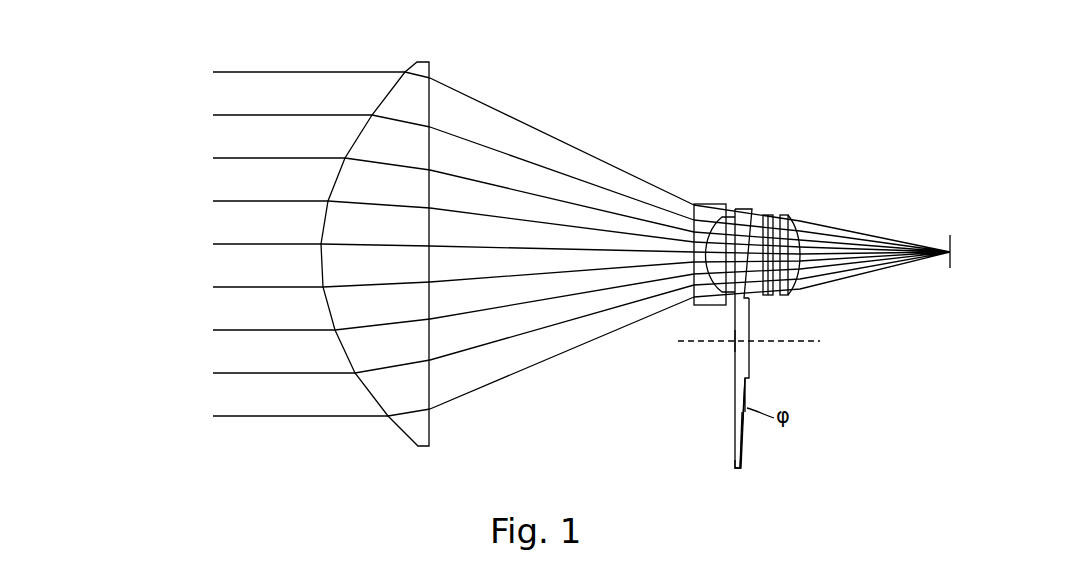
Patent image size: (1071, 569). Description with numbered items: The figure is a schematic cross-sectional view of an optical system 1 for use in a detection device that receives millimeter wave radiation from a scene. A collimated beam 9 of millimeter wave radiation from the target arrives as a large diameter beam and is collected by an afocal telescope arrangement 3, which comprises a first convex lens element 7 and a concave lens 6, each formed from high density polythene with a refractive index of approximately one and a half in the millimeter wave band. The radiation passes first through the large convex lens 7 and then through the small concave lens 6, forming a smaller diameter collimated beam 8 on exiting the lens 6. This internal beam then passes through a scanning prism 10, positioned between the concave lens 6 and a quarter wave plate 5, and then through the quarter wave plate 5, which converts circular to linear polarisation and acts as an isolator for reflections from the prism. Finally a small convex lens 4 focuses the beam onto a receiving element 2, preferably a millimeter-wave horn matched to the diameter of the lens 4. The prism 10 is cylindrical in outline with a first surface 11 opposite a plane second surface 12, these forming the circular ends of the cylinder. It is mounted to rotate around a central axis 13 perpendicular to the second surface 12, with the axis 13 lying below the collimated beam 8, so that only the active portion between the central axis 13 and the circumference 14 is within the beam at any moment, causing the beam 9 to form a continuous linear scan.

The optical system 1 is at (880, 117).
The receiving element 2 is at (951, 262).
The afocal telescope arrangement 3 is at (556, 120).
The small convex lens 4 is at (797, 294).
The quarter wave plate 5 is at (770, 215).
The concave lens 6 is at (705, 307).
The first convex lens element 7 is at (418, 88).
The collimated beam 8 is at (786, 215).
The collimated beam 9 is at (258, 402).
The scanning prism 10 is at (746, 360).
The first surface 11 is at (747, 448).
The second surface 12 is at (734, 432).
The central axis 13 is at (734, 341).
The circumference 14 is at (741, 209).